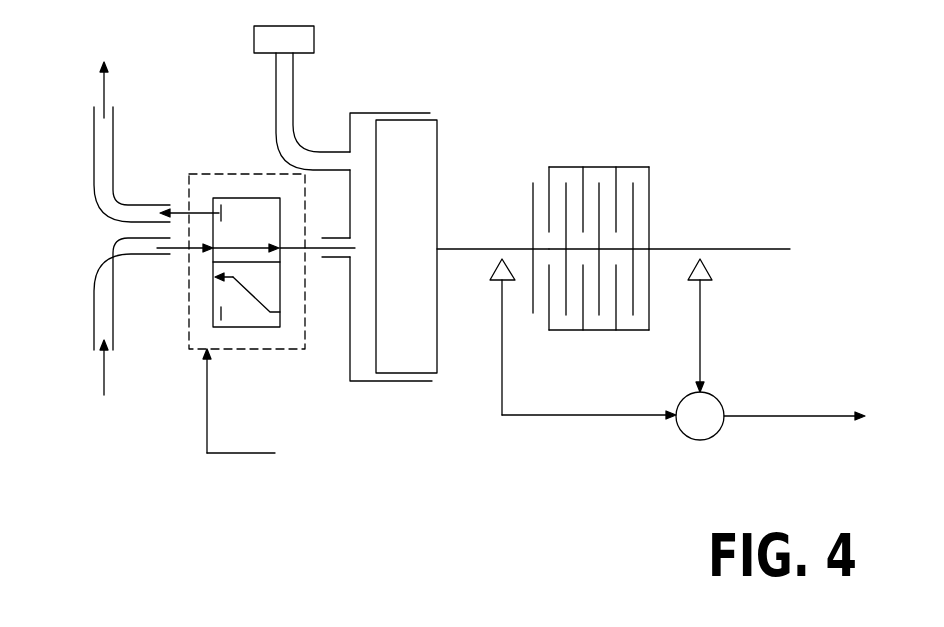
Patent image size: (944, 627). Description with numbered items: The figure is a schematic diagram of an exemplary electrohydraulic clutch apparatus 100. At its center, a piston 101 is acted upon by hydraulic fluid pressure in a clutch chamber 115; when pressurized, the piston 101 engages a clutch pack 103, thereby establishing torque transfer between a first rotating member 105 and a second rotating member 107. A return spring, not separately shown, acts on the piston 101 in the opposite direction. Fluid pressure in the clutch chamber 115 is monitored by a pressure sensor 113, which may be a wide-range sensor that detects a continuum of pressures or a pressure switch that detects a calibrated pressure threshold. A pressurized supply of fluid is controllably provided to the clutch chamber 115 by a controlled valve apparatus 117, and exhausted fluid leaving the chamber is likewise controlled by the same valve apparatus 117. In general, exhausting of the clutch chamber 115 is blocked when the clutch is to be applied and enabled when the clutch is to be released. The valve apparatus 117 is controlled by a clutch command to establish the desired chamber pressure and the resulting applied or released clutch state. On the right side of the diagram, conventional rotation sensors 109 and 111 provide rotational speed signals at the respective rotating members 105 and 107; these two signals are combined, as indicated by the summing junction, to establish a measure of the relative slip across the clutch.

The electrohydraulic clutch apparatus 100 is at (455, 52).
The piston 101 is at (437, 133).
The clutch pack 103 is at (621, 156).
The rotating member 105 is at (448, 249).
The rotating member 107 is at (666, 249).
The rotation sensor 109 is at (497, 285).
The rotation sensor 111 is at (707, 282).
The pressure sensor 113 is at (297, 26).
The clutch chamber 115 is at (360, 353).
The valve apparatus 117 is at (220, 350).